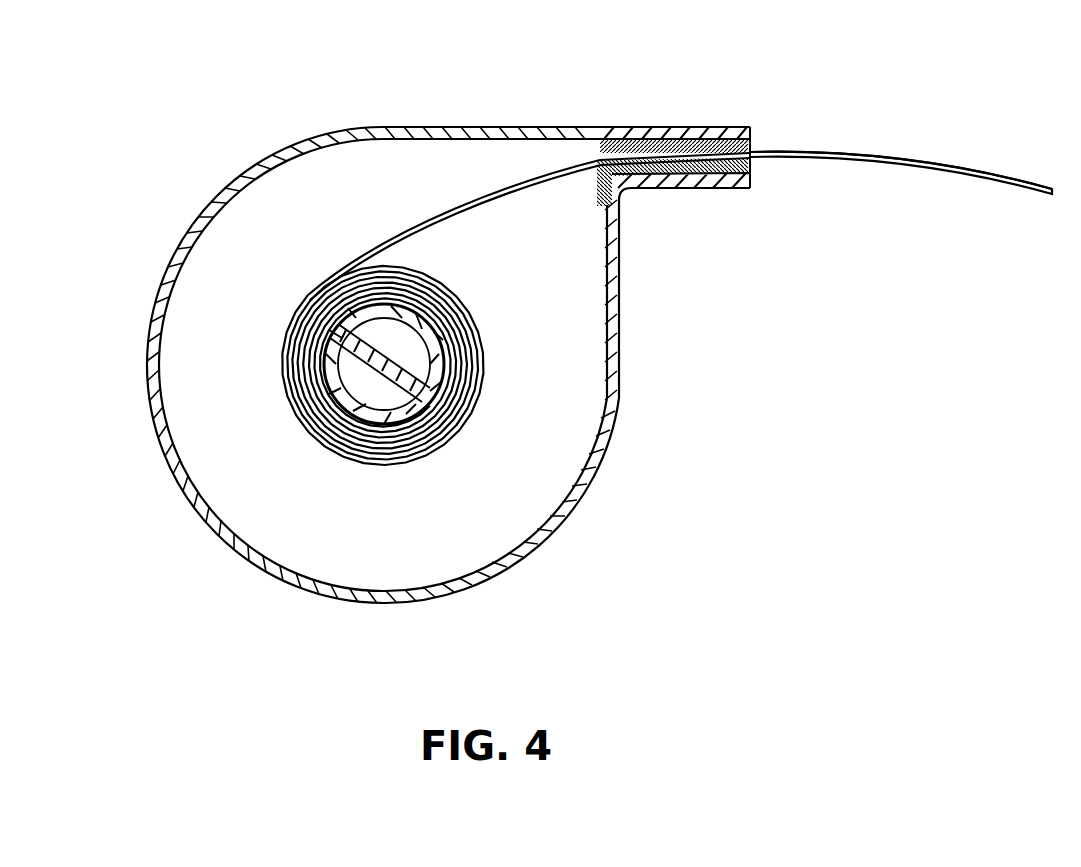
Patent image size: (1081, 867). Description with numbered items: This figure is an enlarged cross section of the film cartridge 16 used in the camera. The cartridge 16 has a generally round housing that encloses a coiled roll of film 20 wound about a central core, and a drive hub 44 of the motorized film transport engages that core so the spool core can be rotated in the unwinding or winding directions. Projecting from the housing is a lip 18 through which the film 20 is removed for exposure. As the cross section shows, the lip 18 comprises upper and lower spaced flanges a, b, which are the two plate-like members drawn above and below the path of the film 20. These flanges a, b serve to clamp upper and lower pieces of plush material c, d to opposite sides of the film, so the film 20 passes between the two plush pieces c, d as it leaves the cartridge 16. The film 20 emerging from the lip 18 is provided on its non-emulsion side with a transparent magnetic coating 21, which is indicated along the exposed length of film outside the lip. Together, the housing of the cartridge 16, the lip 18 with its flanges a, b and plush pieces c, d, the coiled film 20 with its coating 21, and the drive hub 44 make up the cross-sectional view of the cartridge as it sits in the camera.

The film cartridge 16 is at (617, 433).
The lip 18 is at (662, 157).
The film 20 is at (902, 163).
The transparent magnetic coating 21 is at (964, 159).
The drive hub 44 is at (358, 395).
The upper flange a is at (706, 128).
The lower flange b is at (712, 188).
The upper piece of plush material c is at (646, 128).
The lower piece of plush material d is at (655, 188).